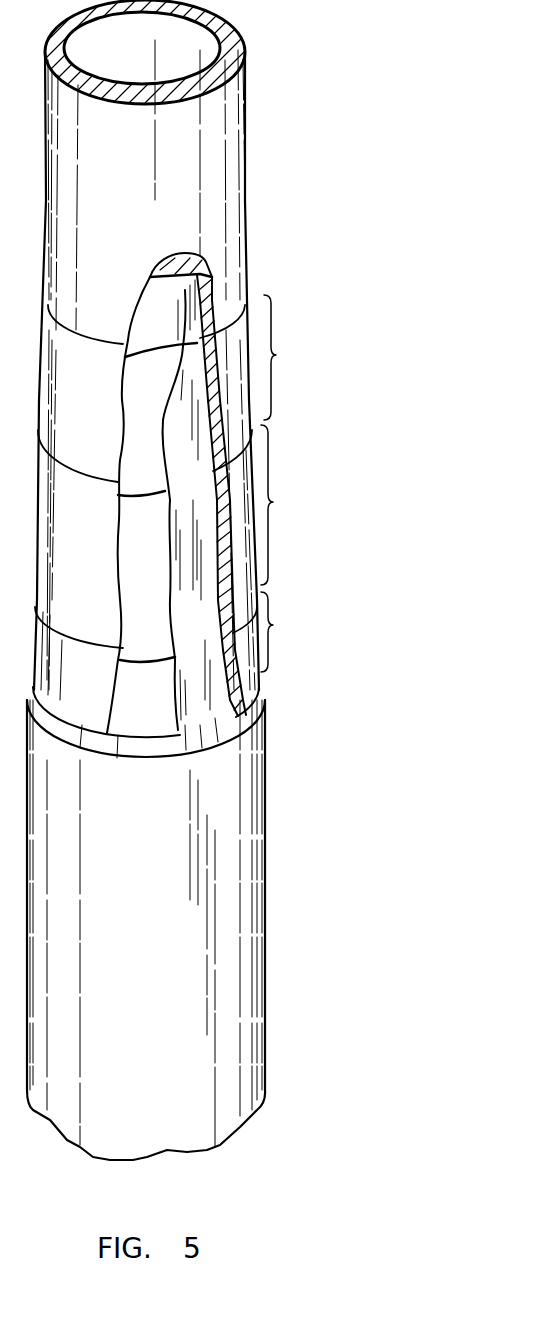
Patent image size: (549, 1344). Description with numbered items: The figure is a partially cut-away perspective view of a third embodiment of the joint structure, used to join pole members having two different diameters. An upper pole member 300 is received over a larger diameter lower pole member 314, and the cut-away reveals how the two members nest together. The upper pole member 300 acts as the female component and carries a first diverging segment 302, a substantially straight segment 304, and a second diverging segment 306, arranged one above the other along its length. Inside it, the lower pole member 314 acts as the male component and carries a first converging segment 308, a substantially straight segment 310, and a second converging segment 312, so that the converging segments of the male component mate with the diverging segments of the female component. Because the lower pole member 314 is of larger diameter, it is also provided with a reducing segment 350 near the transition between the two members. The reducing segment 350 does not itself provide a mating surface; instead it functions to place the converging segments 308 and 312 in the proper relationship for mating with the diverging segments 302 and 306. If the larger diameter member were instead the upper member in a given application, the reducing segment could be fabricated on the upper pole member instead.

The upper pole member 300 is at (185, 181).
The first diverging segment 302 is at (294, 357).
The substantially straight segment 304 is at (184, 505).
The second diverging segment 306 is at (182, 632).
The first converging segment 308 is at (163, 404).
The substantially straight segment 310 is at (166, 563).
The second converging segment 312 is at (162, 680).
The lower pole member 314 is at (220, 958).
The reducing segment 350 is at (167, 732).